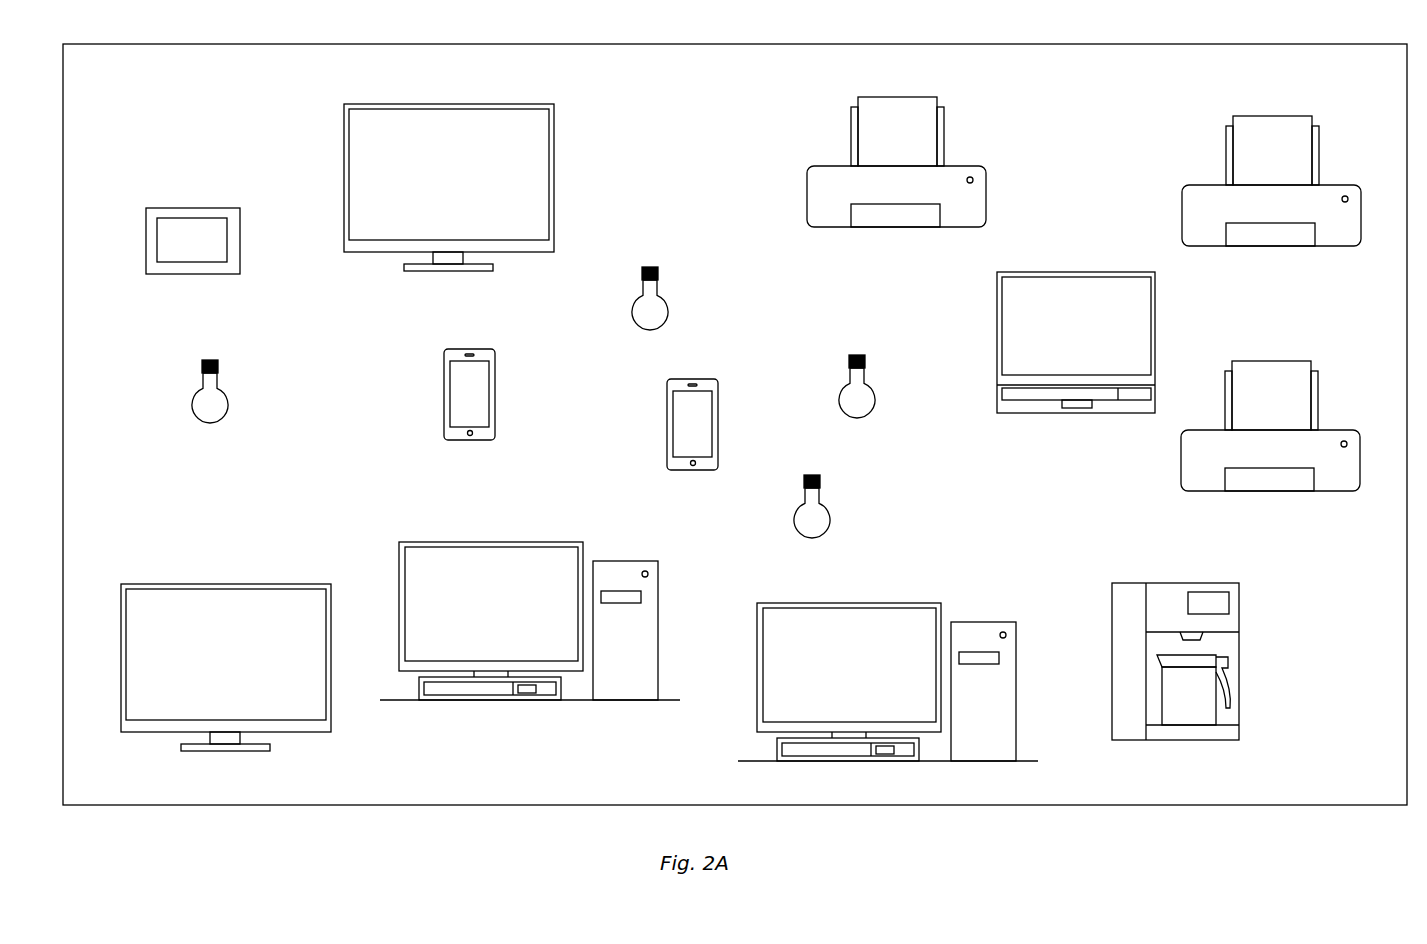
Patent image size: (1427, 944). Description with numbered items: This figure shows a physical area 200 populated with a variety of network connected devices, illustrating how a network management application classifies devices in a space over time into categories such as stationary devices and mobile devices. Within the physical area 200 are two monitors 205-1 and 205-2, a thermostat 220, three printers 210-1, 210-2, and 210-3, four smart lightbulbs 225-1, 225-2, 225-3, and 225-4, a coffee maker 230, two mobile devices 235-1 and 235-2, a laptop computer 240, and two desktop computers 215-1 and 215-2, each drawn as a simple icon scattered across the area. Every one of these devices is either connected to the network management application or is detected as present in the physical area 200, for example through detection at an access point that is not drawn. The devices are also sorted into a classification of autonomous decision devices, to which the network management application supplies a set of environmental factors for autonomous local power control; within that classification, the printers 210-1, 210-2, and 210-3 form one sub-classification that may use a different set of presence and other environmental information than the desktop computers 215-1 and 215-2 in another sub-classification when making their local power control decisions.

The physical area 200 is at (1331, 44).
The thermostat 220 is at (200, 206).
The monitor 205-1 is at (231, 583).
The monitor 205-2 is at (450, 103).
The printer 210-1 is at (898, 227).
The printer 210-2 is at (1273, 245).
The printer 210-3 is at (1272, 491).
The desktop computer 215-1 is at (841, 602).
The desktop computer 215-2 is at (483, 541).
The smart lightbulb 225-1 is at (228, 402).
The smart lightbulb 225-2 is at (670, 310).
The smart lightbulb 225-3 is at (876, 399).
The smart lightbulb 225-4 is at (831, 520).
The coffee maker 230 is at (1239, 643).
The mobile device 235-1 is at (684, 470).
The mobile device 235-2 is at (461, 440).
The laptop computer 240 is at (1078, 272).